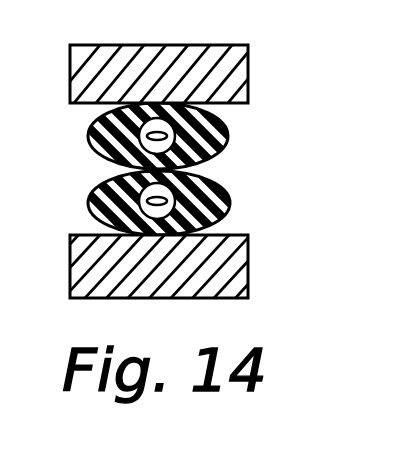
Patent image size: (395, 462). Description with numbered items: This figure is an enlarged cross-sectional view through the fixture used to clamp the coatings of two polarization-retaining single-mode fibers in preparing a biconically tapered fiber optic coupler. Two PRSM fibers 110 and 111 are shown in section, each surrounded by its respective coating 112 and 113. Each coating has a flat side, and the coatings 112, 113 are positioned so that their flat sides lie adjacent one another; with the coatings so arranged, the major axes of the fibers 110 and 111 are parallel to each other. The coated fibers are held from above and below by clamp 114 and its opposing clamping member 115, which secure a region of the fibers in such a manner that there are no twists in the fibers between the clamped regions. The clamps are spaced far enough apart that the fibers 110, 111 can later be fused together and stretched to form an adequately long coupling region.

The PRSM fiber 110 is at (176, 136).
The PRSM fiber 111 is at (176, 200).
The coating 112 is at (90, 136).
The coating 113 is at (92, 201).
The clamp 114 is at (248, 73).
The lower clamping block 115 is at (248, 267).